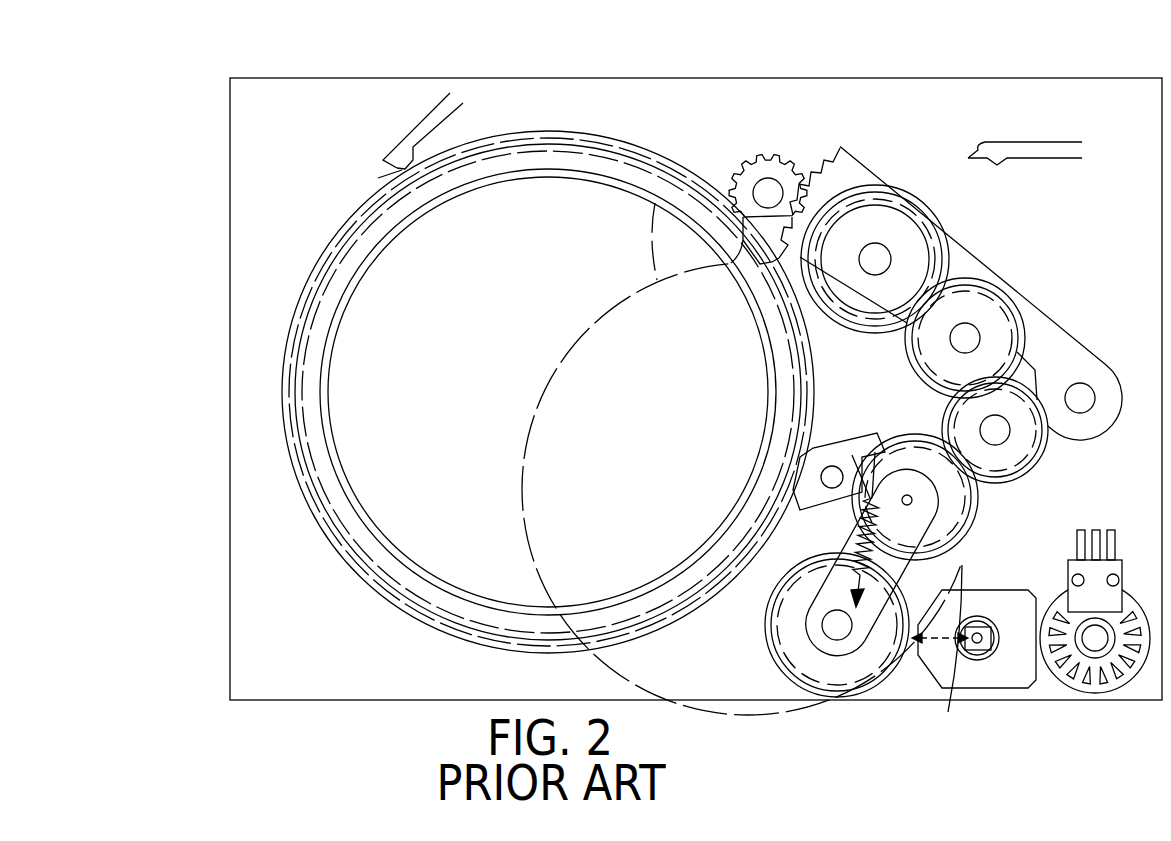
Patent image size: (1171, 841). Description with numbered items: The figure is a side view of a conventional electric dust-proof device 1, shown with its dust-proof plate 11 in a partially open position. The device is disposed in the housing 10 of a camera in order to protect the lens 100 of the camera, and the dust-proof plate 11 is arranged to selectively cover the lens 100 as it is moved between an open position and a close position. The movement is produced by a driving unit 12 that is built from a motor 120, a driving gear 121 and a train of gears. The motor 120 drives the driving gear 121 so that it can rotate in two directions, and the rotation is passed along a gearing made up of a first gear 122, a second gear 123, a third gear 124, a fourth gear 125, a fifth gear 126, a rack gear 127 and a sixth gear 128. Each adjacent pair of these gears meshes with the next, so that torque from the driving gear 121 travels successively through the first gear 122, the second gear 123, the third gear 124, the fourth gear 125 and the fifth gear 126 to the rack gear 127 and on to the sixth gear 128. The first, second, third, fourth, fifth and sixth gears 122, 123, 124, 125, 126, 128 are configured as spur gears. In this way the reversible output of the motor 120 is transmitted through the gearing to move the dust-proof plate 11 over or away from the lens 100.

The electric dust-proof device 1 is at (847, 111).
The housing 10 is at (288, 78).
The dust-proof plate 11 is at (659, 190).
The lens 100 is at (345, 405).
The driving unit 12 is at (1005, 546).
The motor 120 is at (1007, 690).
The driving gear 121 is at (963, 672).
The first gear 122 is at (818, 698).
The second gear 123 is at (837, 503).
The third gear 124 is at (1043, 463).
The fourth gear 125 is at (1025, 322).
The fifth gear 126 is at (940, 207).
The rack gear 127 is at (1013, 278).
The sixth gear 128 is at (768, 157).